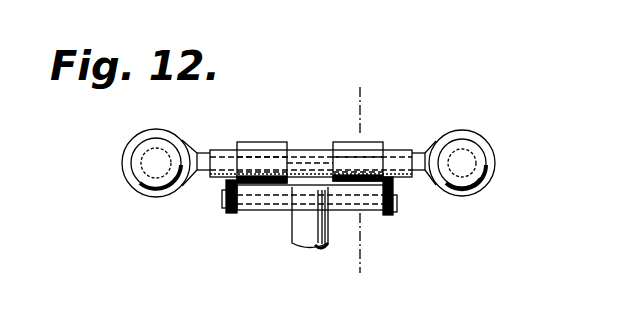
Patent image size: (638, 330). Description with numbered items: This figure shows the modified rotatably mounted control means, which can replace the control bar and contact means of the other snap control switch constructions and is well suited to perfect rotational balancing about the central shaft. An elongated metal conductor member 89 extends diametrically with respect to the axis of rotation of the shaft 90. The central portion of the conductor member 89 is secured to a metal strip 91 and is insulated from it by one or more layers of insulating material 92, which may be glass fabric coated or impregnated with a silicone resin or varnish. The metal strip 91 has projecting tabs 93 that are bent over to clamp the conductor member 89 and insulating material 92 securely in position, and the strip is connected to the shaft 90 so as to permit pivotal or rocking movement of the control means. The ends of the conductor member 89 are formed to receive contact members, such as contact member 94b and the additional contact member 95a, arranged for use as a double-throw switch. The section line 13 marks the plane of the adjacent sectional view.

The conductor member 89 is at (221, 150).
The shaft 90 is at (298, 237).
The metal strip 91 is at (316, 177).
The insulating material 92 is at (295, 155).
The projecting tabs 93 is at (253, 147).
The contact member 94b is at (135, 165).
The contact member 95a is at (483, 153).
The section line 13- 13 is at (362, 95).